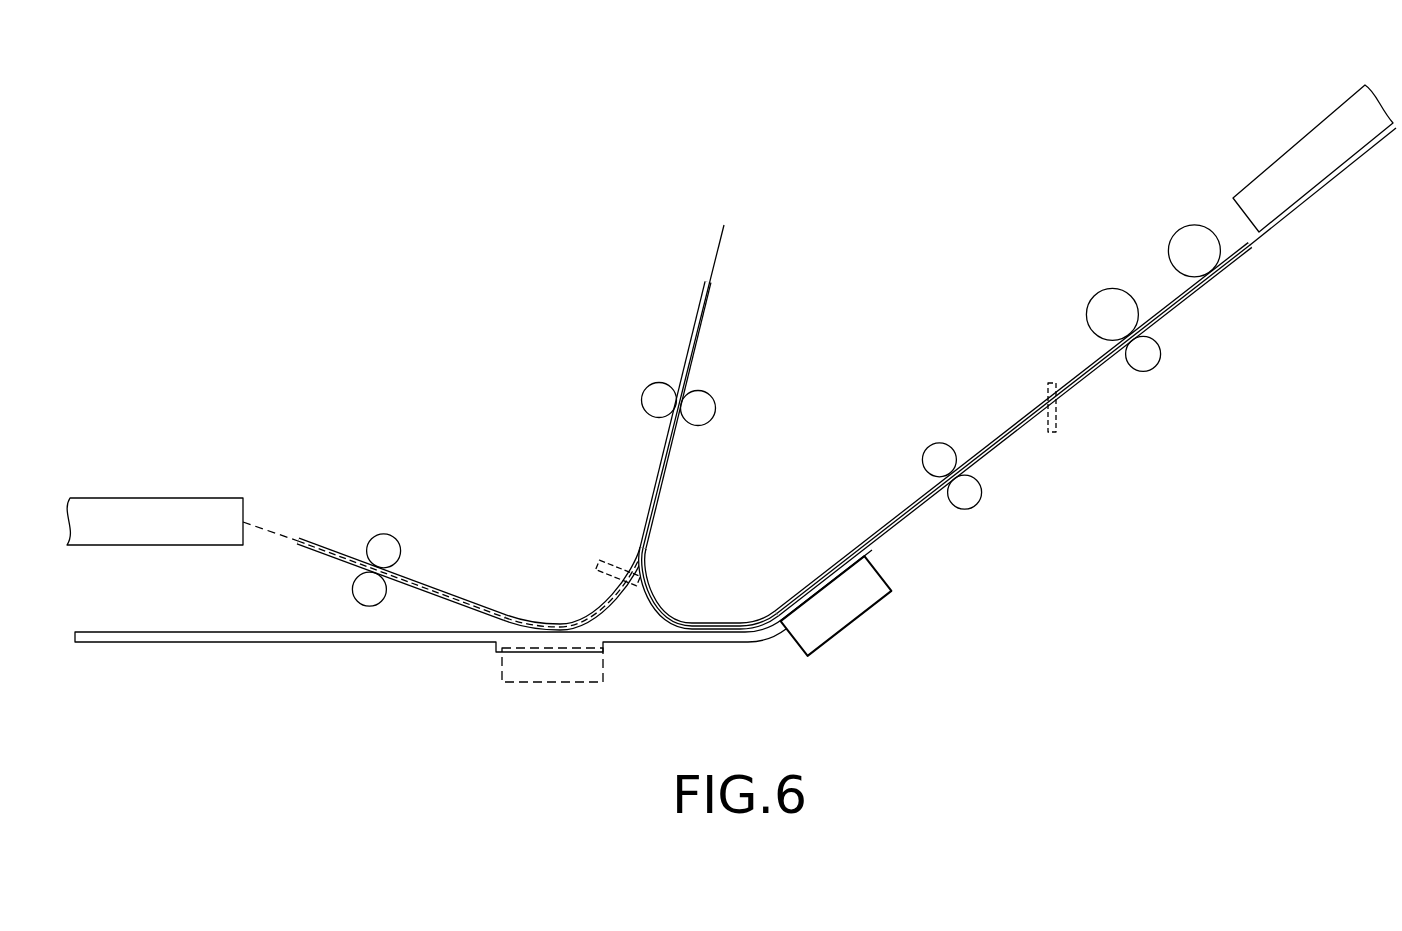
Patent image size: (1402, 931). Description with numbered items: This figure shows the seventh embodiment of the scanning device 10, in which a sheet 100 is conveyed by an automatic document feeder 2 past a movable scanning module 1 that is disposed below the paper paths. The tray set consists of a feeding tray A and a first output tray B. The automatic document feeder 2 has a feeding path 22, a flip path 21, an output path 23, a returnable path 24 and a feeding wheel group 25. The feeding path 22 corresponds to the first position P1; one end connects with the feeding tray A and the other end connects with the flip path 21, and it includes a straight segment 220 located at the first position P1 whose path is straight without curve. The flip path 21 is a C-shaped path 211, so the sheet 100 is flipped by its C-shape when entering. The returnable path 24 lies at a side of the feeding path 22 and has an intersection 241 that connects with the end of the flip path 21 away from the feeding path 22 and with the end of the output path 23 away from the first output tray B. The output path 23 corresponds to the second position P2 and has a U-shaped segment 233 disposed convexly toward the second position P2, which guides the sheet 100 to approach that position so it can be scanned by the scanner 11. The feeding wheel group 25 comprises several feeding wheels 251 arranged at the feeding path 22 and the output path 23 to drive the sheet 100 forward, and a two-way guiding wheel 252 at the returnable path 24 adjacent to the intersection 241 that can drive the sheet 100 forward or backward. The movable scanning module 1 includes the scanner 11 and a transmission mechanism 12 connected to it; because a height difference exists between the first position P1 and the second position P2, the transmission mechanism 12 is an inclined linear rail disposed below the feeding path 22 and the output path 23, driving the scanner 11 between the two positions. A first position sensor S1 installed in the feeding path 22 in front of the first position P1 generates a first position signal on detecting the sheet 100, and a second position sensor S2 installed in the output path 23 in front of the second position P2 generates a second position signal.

The scanning device 10 is at (750, 82).
The movable scanning module 1 is at (780, 703).
The scanner 11 is at (800, 638).
The transmission mechanism 12 is at (657, 647).
The automatic document feeder 2 is at (1144, 272).
The flip path 21 is at (670, 565).
The C-shaped path 211 is at (667, 595).
The feeding path 22 is at (1004, 414).
The straight segment 220 is at (817, 580).
The output path 23 is at (457, 577).
The U-shaped segment 233 is at (550, 625).
The returnable path 24 is at (713, 338).
The intersection 241 is at (637, 540).
The feeding wheel group 25 is at (1087, 282).
The feeding wheel 251 is at (385, 545).
The two-way guiding wheel 252 is at (703, 408).
The sheet 100 is at (1252, 250).
The feeding tray A is at (1308, 157).
The first output tray B is at (153, 510).
The first position P1 is at (859, 641).
The second position P2 is at (552, 693).
The first position sensor S1 is at (1056, 413).
The second position sensor S2 is at (587, 562).